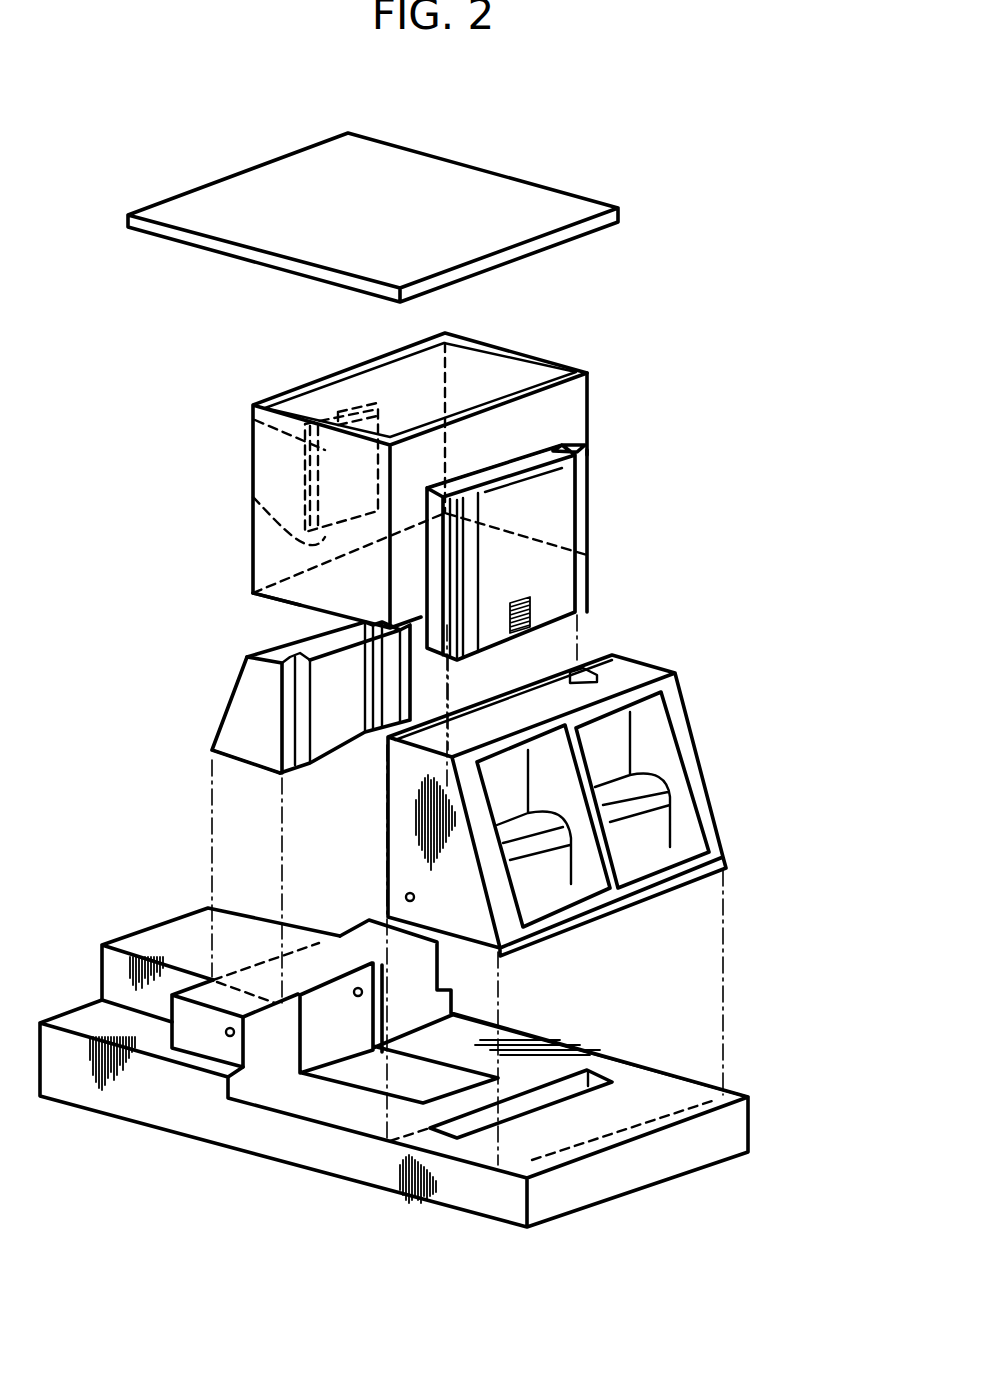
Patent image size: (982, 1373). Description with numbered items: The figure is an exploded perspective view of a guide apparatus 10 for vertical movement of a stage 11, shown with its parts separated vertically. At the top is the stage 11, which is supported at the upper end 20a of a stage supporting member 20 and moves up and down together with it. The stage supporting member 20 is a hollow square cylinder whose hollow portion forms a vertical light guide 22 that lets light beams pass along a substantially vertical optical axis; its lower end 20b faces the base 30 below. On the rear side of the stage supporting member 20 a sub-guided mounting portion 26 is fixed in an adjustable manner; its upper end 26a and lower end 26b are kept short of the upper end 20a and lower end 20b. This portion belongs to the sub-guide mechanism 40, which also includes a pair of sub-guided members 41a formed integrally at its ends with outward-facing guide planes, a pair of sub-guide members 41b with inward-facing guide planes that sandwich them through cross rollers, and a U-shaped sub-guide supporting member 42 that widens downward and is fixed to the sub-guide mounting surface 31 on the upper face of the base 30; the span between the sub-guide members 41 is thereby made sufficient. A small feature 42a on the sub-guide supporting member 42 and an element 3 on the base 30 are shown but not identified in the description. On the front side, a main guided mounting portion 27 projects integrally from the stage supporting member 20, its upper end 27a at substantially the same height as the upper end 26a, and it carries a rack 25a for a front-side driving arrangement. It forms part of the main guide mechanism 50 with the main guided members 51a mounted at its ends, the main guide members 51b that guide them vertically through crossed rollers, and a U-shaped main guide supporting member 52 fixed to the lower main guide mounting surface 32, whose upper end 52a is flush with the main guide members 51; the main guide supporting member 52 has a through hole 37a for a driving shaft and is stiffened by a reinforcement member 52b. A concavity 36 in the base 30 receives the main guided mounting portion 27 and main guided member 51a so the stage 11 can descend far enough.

The measuring apparatus 10 is at (205, 169).
The stage 11 is at (448, 162).
The stage supporting member 20 is at (406, 440).
The upper end 20a is at (557, 362).
The lower end 20b is at (268, 604).
The vertical light guide 22 is at (459, 358).
The sub-guided mounting portion 26 is at (338, 408).
The upper end 26a is at (357, 408).
The lower end 26b is at (253, 497).
The main guided mounting portion 27 is at (543, 588).
The upper end 27a is at (522, 468).
The rack 25a is at (530, 613).
The main guide mechanism 50 is at (563, 575).
The main guide members 51 is at (587, 502).
The main guided members 51a is at (577, 528).
The main guide members 51b is at (590, 670).
The main guide supporting member 52 is at (613, 910).
The upper end 52a is at (640, 673).
The reinforcement member 52b is at (645, 822).
The through hole 37a is at (414, 900).
The sub-guide mechanism 40 is at (285, 861).
The sub-guide members 41 is at (283, 683).
The sub-guided members 41a is at (252, 417).
The sub-guide members 41b is at (300, 755).
The sub-guide supporting member 42 is at (247, 657).
The notch 42a is at (290, 656).
The base 30 is at (394, 1071).
The sub-guide mounting surface 31 is at (260, 977).
The main guide mounting surface 32 is at (632, 1108).
The concavity 36 is at (473, 1125).
The sensor block 3 is at (232, 1038).